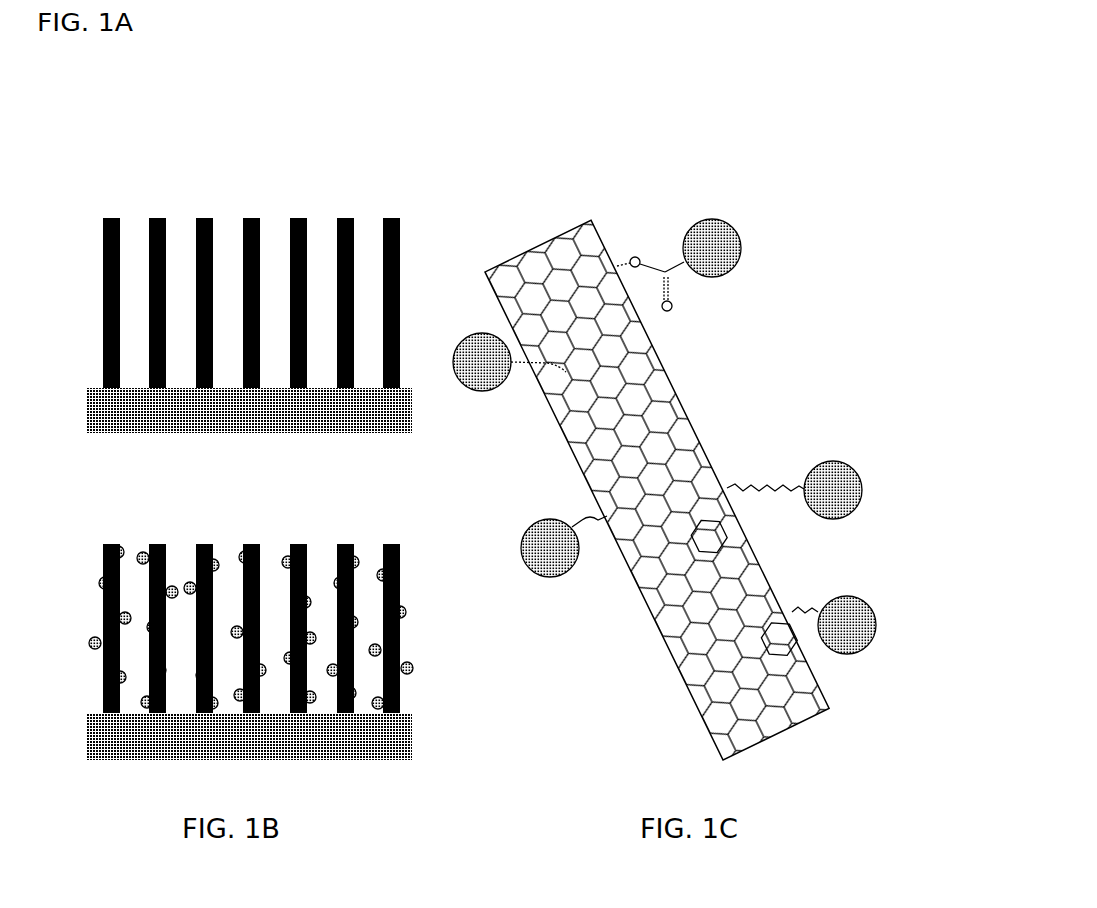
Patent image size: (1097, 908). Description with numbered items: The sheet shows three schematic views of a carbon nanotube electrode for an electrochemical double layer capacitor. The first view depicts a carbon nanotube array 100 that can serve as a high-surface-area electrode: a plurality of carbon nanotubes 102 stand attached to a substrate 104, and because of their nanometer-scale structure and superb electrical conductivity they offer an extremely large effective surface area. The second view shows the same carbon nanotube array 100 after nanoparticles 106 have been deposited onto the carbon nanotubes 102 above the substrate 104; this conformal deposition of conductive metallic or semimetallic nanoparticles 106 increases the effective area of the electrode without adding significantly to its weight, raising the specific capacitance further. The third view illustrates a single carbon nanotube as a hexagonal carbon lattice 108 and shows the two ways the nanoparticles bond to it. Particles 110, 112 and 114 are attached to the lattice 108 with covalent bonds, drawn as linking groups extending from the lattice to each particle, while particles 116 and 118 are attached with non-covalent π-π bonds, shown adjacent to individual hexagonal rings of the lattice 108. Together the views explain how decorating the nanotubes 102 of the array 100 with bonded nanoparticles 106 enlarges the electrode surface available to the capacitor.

In FIG. 1A, the carbon nanotube array 100 is at (313, 118).
In FIG. 1A, the carbon nanotubes 102 is at (378, 205).
In FIG. 1B, the carbon nanotubes 102 is at (251, 628).
In FIG. 1A, the substrate 104 is at (164, 441).
In FIG. 1B, the substrate 104 is at (249, 736).
In FIG. 1B, the nanoparticles 106 is at (283, 648).
In FIG. 1C, the hexagonal carbon lattice 108 is at (646, 372).
In FIG. 1C, the particle 110 is at (750, 245).
In FIG. 1C, the particle 112 is at (470, 397).
In FIG. 1C, the particle 114 is at (790, 472).
In FIG. 1C, the particle 116 is at (542, 587).
In FIG. 1C, the particle 118 is at (820, 597).